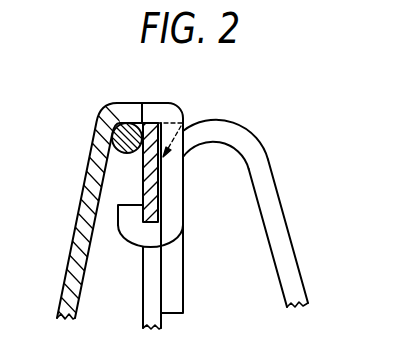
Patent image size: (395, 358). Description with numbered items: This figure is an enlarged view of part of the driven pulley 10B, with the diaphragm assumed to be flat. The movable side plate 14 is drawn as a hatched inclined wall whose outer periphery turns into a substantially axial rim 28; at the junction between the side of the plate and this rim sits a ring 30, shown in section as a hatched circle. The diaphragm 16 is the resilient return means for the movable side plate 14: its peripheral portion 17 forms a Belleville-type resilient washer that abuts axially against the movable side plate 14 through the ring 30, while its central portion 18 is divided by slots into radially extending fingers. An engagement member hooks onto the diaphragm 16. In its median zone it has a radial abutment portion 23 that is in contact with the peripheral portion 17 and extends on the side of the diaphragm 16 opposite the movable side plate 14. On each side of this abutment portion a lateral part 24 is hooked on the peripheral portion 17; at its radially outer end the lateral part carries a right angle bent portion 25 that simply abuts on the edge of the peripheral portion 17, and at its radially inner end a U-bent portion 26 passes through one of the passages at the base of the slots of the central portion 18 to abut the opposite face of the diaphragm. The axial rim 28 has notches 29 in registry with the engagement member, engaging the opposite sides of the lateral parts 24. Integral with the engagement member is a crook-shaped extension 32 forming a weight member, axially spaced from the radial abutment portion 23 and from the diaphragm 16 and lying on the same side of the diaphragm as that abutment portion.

The driven pulley 10B is at (134, 103).
The movable side plate 14 is at (74, 234).
The diaphragm 16 is at (196, 141).
The peripheral portion 17 is at (159, 202).
The central portion 18 is at (146, 307).
The radial abutment portion 23 is at (184, 304).
The lateral part 24 is at (152, 235).
The right angle bent portion 25 is at (155, 113).
The U-bent portion 26 is at (120, 226).
The axial rim 28 is at (176, 103).
The notch 29 is at (118, 102).
The ring 30 is at (98, 126).
The extension 32 is at (279, 224).